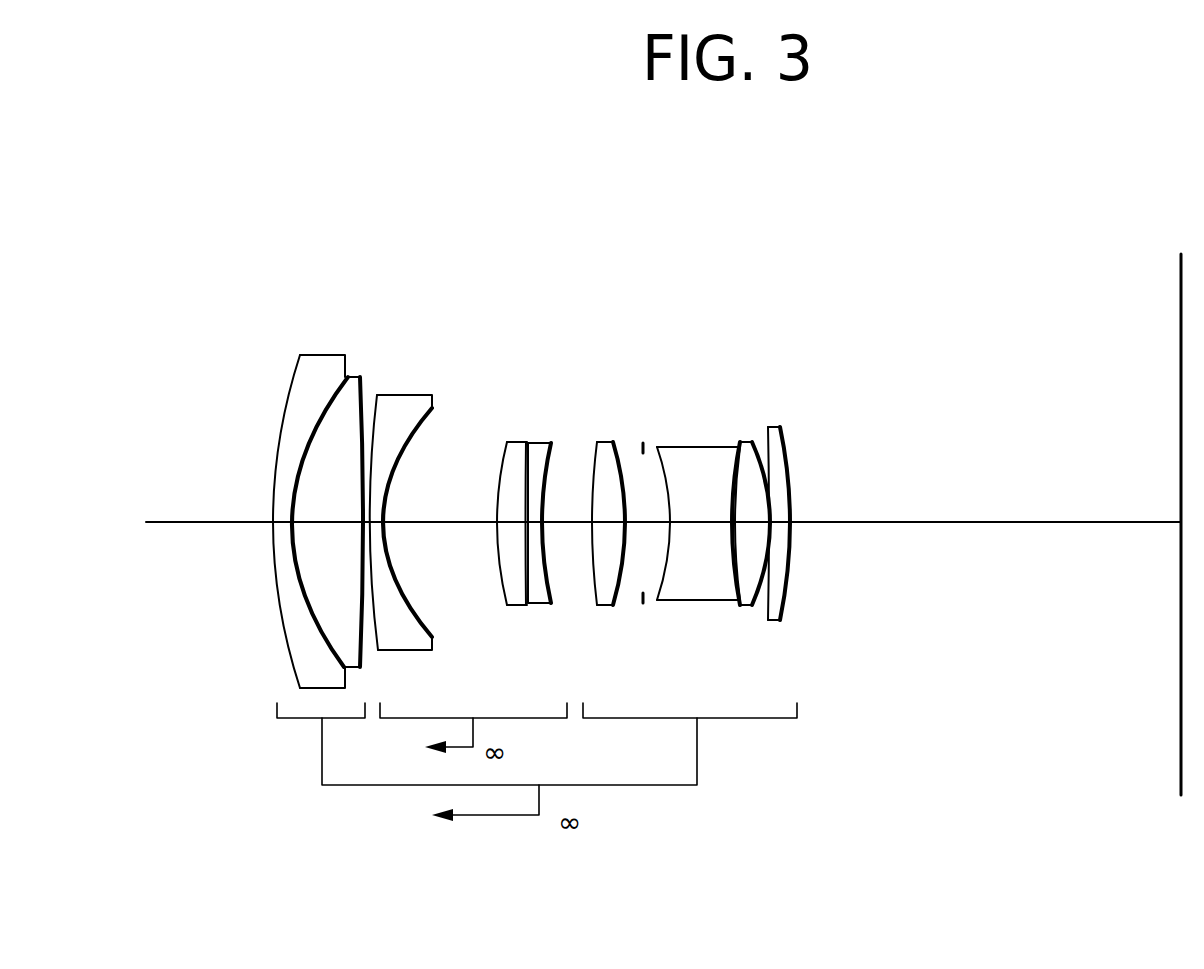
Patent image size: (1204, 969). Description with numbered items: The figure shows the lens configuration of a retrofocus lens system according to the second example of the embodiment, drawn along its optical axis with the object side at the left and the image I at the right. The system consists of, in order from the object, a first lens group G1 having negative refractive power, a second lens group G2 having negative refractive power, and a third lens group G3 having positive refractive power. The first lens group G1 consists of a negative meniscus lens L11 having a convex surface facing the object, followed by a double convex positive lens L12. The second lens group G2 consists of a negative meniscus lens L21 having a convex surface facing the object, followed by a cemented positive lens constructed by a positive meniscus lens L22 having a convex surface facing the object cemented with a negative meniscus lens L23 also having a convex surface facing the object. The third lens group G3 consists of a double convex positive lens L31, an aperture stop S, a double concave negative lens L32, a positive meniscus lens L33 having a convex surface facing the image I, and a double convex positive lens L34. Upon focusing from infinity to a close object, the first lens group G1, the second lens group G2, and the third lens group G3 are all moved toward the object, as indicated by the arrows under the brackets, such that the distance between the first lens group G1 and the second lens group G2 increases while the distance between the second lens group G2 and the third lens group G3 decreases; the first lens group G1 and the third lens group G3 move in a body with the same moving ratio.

The negative meniscus lens L11 is at (323, 355).
The double convex positive lens L12 is at (355, 377).
The negative meniscus lens L21 is at (405, 395).
The positive meniscus lens L22 is at (515, 442).
The negative meniscus lens L23 is at (535, 443).
The double convex positive lens L31 is at (603, 442).
The double concave negative lens L32 is at (690, 447).
The positive meniscus lens L33 is at (745, 442).
The double convex positive lens L34 is at (772, 428).
The aperture stop S is at (641, 447).
The image I is at (1181, 328).
The first lens group G1 is at (487, 744).
The second lens group G2 is at (474, 731).
The third lens group G3 is at (690, 732).